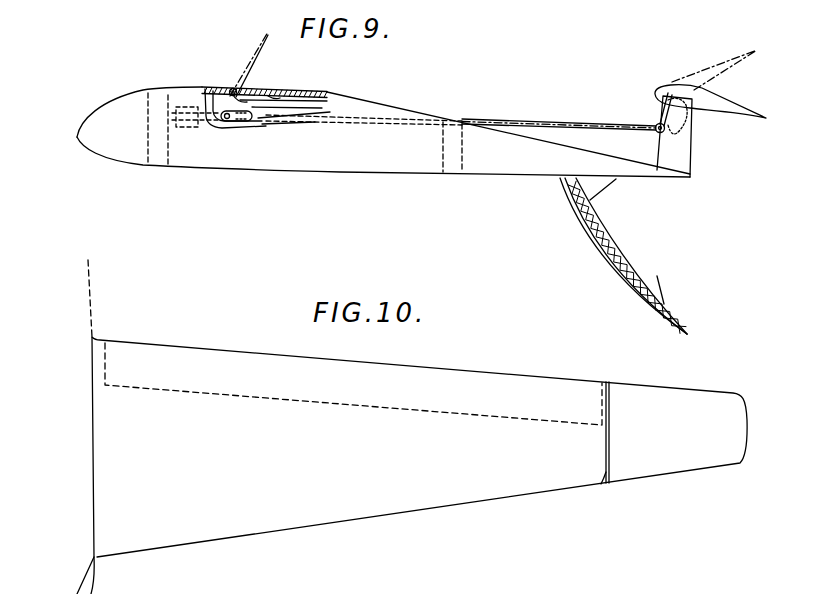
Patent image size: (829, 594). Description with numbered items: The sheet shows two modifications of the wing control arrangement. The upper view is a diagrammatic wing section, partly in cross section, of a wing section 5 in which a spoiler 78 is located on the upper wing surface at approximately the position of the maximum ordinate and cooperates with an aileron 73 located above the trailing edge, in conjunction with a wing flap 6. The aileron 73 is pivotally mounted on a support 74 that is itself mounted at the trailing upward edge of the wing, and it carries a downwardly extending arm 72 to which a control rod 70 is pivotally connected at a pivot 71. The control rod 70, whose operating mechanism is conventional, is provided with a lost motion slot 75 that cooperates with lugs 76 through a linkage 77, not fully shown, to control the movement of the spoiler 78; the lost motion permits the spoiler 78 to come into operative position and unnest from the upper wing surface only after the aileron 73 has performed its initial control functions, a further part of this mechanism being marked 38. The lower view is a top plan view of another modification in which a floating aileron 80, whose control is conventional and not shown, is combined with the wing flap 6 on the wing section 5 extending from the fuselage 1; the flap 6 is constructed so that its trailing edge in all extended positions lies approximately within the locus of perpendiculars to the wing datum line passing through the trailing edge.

In FIG. 10, the fuselage 1 is at (85, 313).
In FIG. 9, the wing section 5 is at (397, 109).
In FIG. 10, the wing section 5 is at (360, 521).
In FIG. 9, the wing flap 6 is at (602, 241).
In FIG. 10, the wing flap 6 is at (463, 415).
In FIG. 9, the lever 38 is at (279, 97).
In FIG. 9, the control rod 70 is at (552, 120).
In FIG. 9, the pivot 71 is at (656, 126).
In FIG. 9, the downwardly extending arm 72 is at (660, 101).
In FIG. 9, the aileron 73 is at (725, 108).
In FIG. 9, the support 74 is at (693, 152).
In FIG. 9, the lost motion slot 75 is at (237, 122).
In FIG. 9, the lugs 76 is at (217, 90).
In FIG. 9, the linkage 77 is at (229, 89).
In FIG. 9, the spoiler 78 is at (269, 88).
In FIG. 10, the floating aileron 80 is at (695, 397).